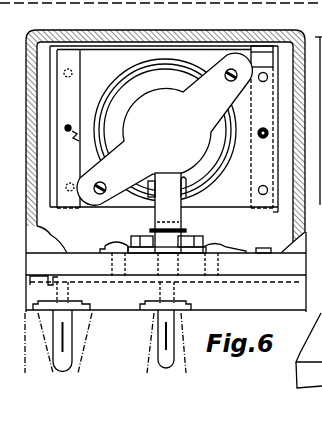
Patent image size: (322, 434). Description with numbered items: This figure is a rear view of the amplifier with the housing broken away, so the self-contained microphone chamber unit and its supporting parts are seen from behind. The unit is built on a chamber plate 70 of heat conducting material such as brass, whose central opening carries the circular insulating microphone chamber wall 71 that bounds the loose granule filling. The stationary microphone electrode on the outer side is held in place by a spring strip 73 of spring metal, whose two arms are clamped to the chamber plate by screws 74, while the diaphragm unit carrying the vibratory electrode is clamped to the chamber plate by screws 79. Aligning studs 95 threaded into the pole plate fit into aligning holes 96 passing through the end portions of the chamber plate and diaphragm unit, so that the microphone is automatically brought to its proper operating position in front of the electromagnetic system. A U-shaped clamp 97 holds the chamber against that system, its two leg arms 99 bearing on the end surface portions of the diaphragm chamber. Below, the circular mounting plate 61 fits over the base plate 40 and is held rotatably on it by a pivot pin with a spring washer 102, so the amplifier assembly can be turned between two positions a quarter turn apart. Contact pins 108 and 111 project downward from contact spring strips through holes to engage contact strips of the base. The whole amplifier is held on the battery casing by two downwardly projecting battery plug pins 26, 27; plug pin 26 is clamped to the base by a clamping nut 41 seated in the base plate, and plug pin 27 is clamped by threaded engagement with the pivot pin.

The U-shaped clamp 97 is at (130, 46).
The screws 79 is at (73, 73).
The aligning holes 96 is at (78, 124).
The aligning studs 95 is at (80, 139).
The leg arms 99 is at (54, 195).
The screws 74 is at (238, 80).
The spring strip 73 is at (232, 151).
The microphone chamber wall 71 is at (214, 177).
The chamber plate 70 is at (278, 208).
The mounting plate 61 is at (75, 259).
The contact pin 111 is at (119, 244).
The spring washer 102 is at (199, 237).
The contact pin 108 is at (211, 249).
The clamping nut 41 is at (174, 272).
The base plate 40 is at (126, 308).
The battery plug pin 26 is at (73, 366).
The battery plug pin 27 is at (176, 366).